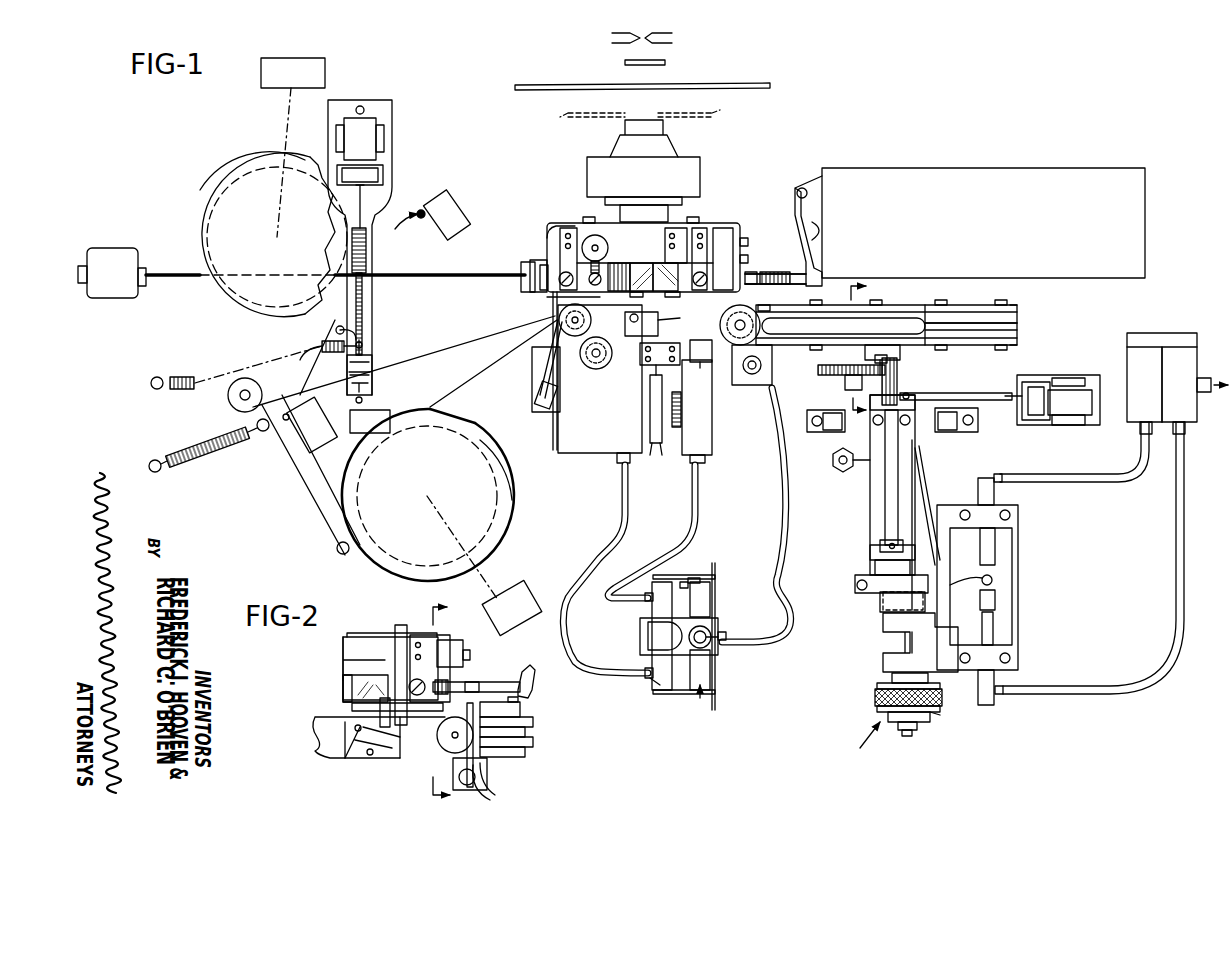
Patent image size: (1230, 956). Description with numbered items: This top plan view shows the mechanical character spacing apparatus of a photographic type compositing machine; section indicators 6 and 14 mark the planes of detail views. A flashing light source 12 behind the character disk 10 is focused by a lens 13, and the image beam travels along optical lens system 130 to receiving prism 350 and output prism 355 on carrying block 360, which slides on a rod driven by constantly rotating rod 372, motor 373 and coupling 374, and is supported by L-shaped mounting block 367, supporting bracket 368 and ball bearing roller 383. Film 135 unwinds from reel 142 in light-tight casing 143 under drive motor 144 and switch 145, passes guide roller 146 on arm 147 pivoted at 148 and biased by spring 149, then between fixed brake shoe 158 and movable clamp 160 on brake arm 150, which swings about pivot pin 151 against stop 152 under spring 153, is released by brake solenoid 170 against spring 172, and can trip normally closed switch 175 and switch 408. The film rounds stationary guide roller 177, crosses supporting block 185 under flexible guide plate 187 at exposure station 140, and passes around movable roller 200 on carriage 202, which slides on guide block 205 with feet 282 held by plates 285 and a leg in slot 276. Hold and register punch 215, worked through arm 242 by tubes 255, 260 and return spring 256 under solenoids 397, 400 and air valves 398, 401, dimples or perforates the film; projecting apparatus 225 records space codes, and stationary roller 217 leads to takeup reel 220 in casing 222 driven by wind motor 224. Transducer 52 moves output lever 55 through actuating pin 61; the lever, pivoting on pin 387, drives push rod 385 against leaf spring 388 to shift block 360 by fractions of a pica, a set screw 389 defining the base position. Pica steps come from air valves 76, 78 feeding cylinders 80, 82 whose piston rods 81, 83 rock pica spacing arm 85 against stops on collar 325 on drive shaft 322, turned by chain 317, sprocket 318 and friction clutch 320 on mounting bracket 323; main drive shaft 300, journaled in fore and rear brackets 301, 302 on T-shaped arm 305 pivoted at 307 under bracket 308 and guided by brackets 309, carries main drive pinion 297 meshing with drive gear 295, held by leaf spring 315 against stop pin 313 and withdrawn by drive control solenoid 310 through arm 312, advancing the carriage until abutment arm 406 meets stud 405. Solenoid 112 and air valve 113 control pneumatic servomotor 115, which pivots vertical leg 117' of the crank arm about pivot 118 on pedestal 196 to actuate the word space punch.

In FIG. 1, the plate 10 is at (758, 82).
In FIG. 1, the contact members 12 is at (603, 36).
In FIG. 1, the strip 13 is at (665, 62).
In FIG. 2, the section line 14 is at (422, 704).
In FIG. 1, the housing 52 is at (978, 226).
In FIG. 1, the lever 55 is at (792, 204).
In FIG. 2, the lever 55 is at (536, 684).
In FIG. 1, the knob 61 is at (798, 210).
In FIG. 1, the pump 76 is at (1148, 333).
In FIG. 1, the pump outlet 78 is at (1185, 402).
In FIG. 1, the conduit 80 is at (997, 478).
In FIG. 1, the valve member 81 is at (996, 560).
In FIG. 1, the conduit 82 is at (1000, 700).
In FIG. 1, the valve member 83 is at (996, 598).
In FIG. 1, the ball 85 is at (994, 580).
In FIG. 1, the valve body 112 is at (655, 640).
In FIG. 1, the valve port 113 is at (705, 642).
In FIG. 1, the finger 115 is at (740, 372).
In FIG. 2, the finger 115 is at (495, 784).
In FIG. 2, the guide 117' is at (349, 758).
In FIG. 2, the arm 118 is at (398, 760).
In FIG. 1, the head 130 is at (602, 150).
In FIG. 1, the tape 135 is at (448, 347).
In FIG. 2, the tape 135 is at (315, 733).
In FIG. 1, the bracket 140 is at (650, 330).
In FIG. 1, the supply reel 142 is at (218, 185).
In FIG. 1, the reel rim 143 is at (267, 157).
In FIG. 1, the motor 144 is at (294, 70).
In FIG. 1, the plate 145 is at (312, 448).
In FIG. 1, the pulley 146 is at (228, 398).
In FIG. 1, the arm 147 is at (268, 453).
In FIG. 1, the pivot 148 is at (336, 552).
In FIG. 1, the spring 149 is at (172, 471).
In FIG. 1, the frame 150 is at (372, 296).
In FIG. 1, the pivot hole 151 is at (360, 105).
In FIG. 1, the spring 152 is at (300, 352).
In FIG. 1, the spring anchor 153 is at (180, 373).
In FIG. 1, the block 158 is at (380, 365).
In FIG. 1, the guide 160 is at (372, 378).
In FIG. 1, the brake 170 is at (366, 140).
In FIG. 1, the spring 172 is at (362, 248).
In FIG. 1, the block 175 is at (390, 405).
In FIG. 1, the roller 177 is at (560, 330).
In FIG. 1, the block 185 is at (590, 445).
In FIG. 2, the plate 187 is at (352, 708).
In FIG. 2, the member 196 is at (520, 710).
In FIG. 1, the roller 200 is at (758, 343).
In FIG. 2, the roller 200 is at (450, 745).
In FIG. 1, the guide rail 202 is at (881, 344).
In FIG. 2, the guide rail 202 is at (532, 745).
In FIG. 1, the rail 205 is at (978, 302).
In FIG. 1, the block 215 is at (649, 368).
In FIG. 1, the roller 217 is at (588, 368).
In FIG. 1, the take-up roller 220 is at (505, 513).
In FIG. 1, the roller rim 222 is at (508, 490).
In FIG. 1, the motor 224 is at (521, 606).
In FIG. 1, the pin 225 is at (705, 365).
In FIG. 1, the piston 242 is at (650, 445).
In FIG. 1, the cylinder 255 is at (702, 482).
In FIG. 1, the spring 256 is at (680, 432).
In FIG. 1, the hose 260 is at (622, 508).
In FIG. 1, the slot 276 is at (1010, 325).
In FIG. 1, the roller 282 is at (765, 313).
In FIG. 1, the rail edge 285 is at (1010, 306).
In FIG. 1, the rack 295 is at (832, 376).
In FIG. 1, the pinion 297 is at (898, 378).
In FIG. 1, the piston rod 300 is at (884, 504).
In FIG. 1, the cylinder head 301 is at (908, 412).
In FIG. 1, the cylinder base 302 is at (875, 550).
In FIG. 1, the cylinder 305 is at (870, 520).
In FIG. 1, the member 307 is at (870, 606).
In FIG. 1, the plate 308 is at (855, 584).
In FIG. 1, the stop 309 is at (827, 428).
In FIG. 1, the valve 310 is at (1063, 412).
In FIG. 1, the link 312 is at (978, 393).
In FIG. 1, the nut 313 is at (830, 460).
In FIG. 1, the arm 315 is at (922, 470).
In FIG. 1, the knurled knob 317 is at (875, 694).
In FIG. 1, the screw 318 is at (930, 712).
In FIG. 1, the adjusting assembly 320 is at (878, 744).
In FIG. 1, the bracket 322 is at (905, 648).
In FIG. 1, the valve frame 323 is at (1010, 656).
In FIG. 1, the slide 325 is at (880, 608).
In FIG. 1, the housing 350 is at (638, 262).
In FIG. 1, the post 355 is at (678, 250).
In FIG. 1, the block 360 is at (550, 258).
In FIG. 2, the block 360 is at (342, 686).
In FIG. 2, the block 367 is at (350, 645).
In FIG. 1, the cover 368 is at (603, 226).
In FIG. 2, the cover 368 is at (378, 633).
In FIG. 1, the shaft 372 is at (172, 279).
In FIG. 1, the motor 373 is at (114, 250).
In FIG. 1, the coupling 374 is at (525, 264).
In FIG. 1, the roller 383 is at (590, 238).
In FIG. 1, the rod 385 is at (806, 270).
In FIG. 2, the rod 385 is at (512, 681).
In FIG. 1, the pivot 387 is at (803, 186).
In FIG. 1, the plate 388 is at (552, 300).
In FIG. 1, the pin 389 is at (752, 274).
In FIG. 2, the pin 389 is at (470, 682).
In FIG. 1, the port 397 is at (700, 700).
In FIG. 1, the port 398 is at (650, 695).
In FIG. 1, the cylinder 400 is at (705, 600).
In FIG. 1, the valve assembly 401 is at (670, 588).
In FIG. 1, the member 405 is at (892, 345).
In FIG. 1, the member 406 is at (882, 360).
In FIG. 1, the sensor 408 is at (452, 204).
In FIG. 1, the section line 6 is at (851, 348).